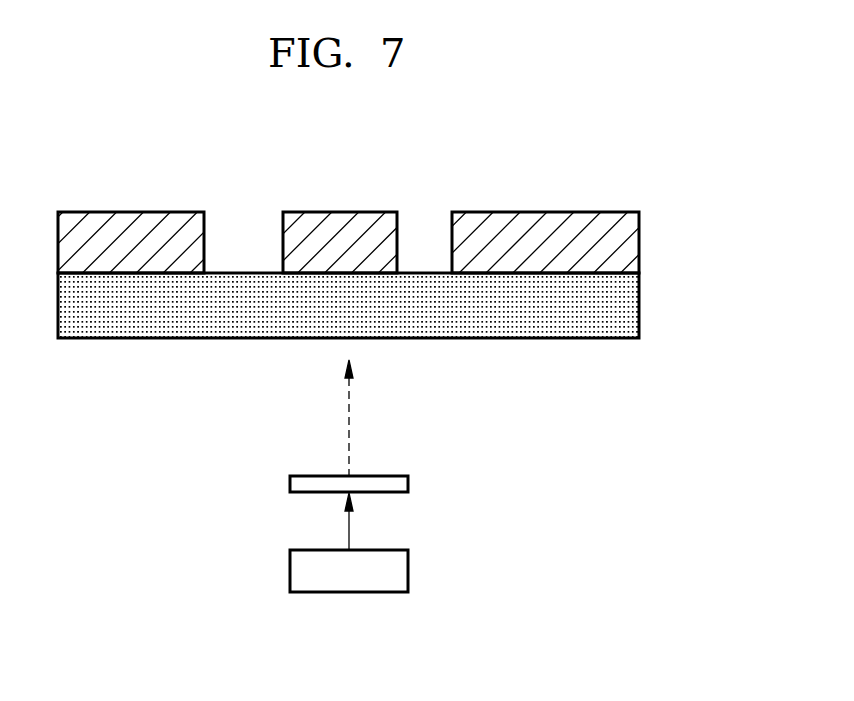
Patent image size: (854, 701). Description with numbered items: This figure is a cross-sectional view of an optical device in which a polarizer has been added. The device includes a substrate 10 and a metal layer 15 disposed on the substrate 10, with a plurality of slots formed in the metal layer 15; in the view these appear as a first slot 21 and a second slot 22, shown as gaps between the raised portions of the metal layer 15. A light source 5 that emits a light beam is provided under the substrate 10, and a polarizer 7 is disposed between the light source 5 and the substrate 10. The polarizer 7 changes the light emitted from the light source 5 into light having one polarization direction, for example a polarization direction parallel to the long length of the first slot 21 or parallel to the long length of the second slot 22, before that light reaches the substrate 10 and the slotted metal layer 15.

The light source 5 is at (410, 572).
The polarizer 7 is at (400, 484).
The substrate 10 is at (623, 308).
The metal layer 15 is at (623, 242).
The first slot 21 is at (243, 240).
The second slot 22 is at (417, 240).